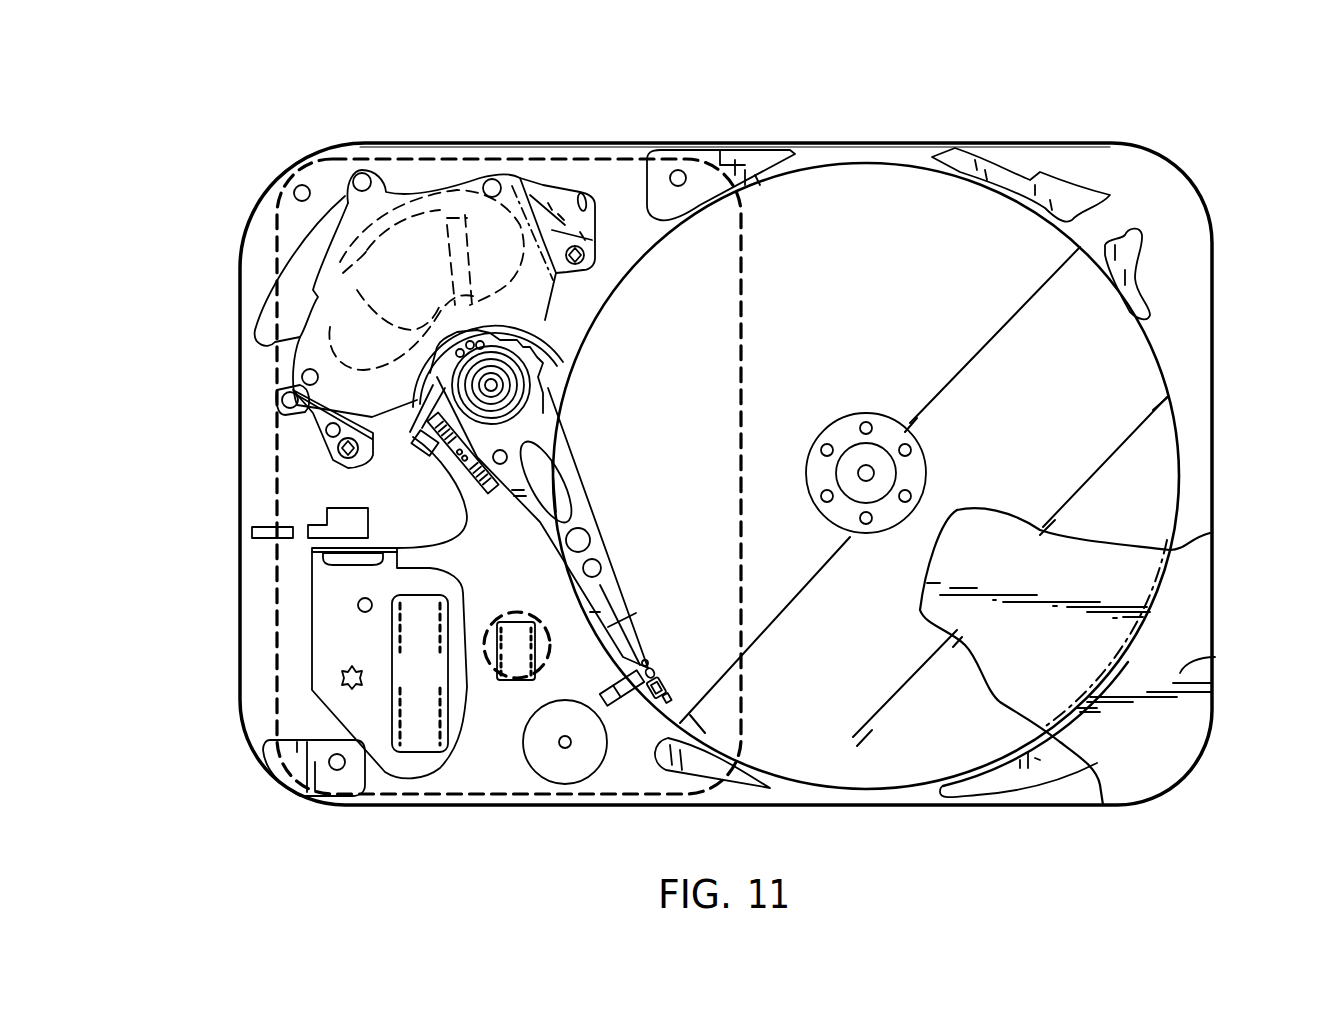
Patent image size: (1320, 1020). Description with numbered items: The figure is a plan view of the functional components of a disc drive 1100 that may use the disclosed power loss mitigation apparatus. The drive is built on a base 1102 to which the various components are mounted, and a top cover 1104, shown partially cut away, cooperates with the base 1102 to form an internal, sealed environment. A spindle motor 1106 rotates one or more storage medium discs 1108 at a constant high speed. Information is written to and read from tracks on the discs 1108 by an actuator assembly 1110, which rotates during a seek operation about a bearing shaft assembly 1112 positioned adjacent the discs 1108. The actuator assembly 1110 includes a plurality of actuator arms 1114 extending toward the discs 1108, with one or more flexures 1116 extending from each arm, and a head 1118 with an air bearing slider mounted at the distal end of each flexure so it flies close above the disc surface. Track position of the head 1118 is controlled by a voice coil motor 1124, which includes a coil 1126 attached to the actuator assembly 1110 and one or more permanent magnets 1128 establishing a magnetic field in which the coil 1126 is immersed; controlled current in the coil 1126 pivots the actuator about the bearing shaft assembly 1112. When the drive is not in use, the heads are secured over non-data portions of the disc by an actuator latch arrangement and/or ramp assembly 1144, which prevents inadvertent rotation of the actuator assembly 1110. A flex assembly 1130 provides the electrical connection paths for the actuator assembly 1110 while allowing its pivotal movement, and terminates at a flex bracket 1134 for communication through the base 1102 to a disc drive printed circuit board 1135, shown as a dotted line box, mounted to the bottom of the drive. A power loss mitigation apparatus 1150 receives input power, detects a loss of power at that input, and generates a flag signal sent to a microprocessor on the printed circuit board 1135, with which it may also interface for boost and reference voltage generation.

The disc drive 1100 is at (210, 134).
The base 1102 is at (617, 160).
The top cover 1104 is at (1185, 668).
The spindle motor 1106 is at (866, 473).
The storage medium disc 1108 is at (838, 213).
The actuator assembly 1110 is at (598, 476).
The bearing shaft assembly 1112 is at (495, 385).
The actuator arm 1114 is at (585, 535).
The flexure 1116 is at (643, 628).
The head 1118 is at (668, 690).
The voice coil motor 1124 is at (452, 160).
The coil 1126 is at (373, 157).
The permanent magnet 1128 is at (543, 160).
The flex assembly 1130 is at (462, 535).
The flex bracket 1134 is at (328, 628).
The disc drive printed circuit board 1135 is at (268, 440).
The ramp assembly 1144 is at (620, 695).
The power loss mitigation apparatus 1150 is at (497, 683).